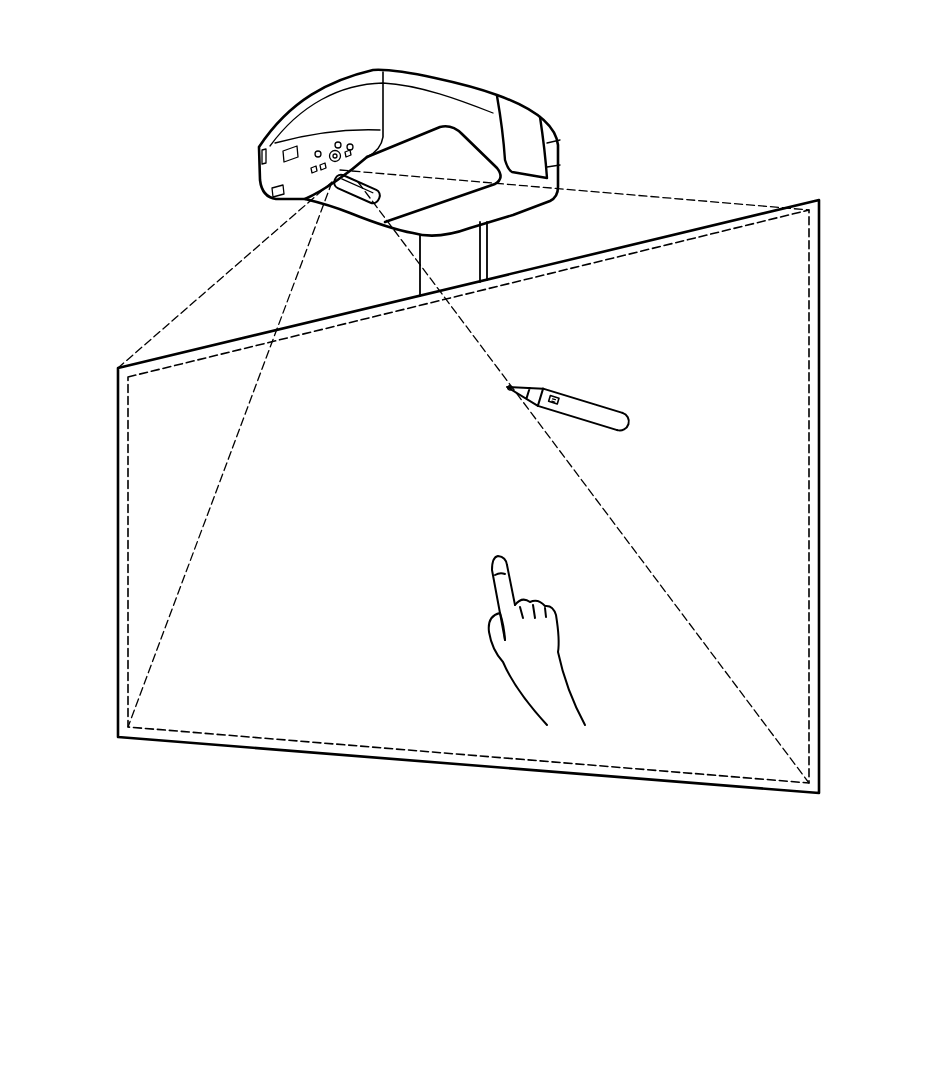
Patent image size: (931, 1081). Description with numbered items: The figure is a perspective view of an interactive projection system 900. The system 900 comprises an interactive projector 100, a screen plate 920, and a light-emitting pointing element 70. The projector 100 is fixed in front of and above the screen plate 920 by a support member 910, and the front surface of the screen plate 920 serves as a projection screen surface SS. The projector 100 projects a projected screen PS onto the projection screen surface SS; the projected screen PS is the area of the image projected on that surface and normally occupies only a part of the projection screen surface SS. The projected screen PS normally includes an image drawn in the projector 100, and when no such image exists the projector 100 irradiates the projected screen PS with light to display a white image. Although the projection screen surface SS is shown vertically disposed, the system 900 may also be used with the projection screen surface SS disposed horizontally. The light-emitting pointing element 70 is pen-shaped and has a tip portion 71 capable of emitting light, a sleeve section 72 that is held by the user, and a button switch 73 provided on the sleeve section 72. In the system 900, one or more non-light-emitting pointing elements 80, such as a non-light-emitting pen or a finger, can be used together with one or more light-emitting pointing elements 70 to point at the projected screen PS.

The interactive projection system 900 is at (149, 107).
The interactive projector 100 is at (443, 82).
The support member 910 is at (488, 247).
The screen plate 920 is at (801, 200).
The projected screen PS is at (118, 426).
The projection screen surface SS is at (118, 553).
The light-emitting pointing element 70 is at (578, 395).
The tip portion 71 is at (510, 385).
The sleeve section 72 is at (600, 426).
The button switch 73 is at (548, 404).
The non-light-emitting pointing element 80 is at (497, 583).